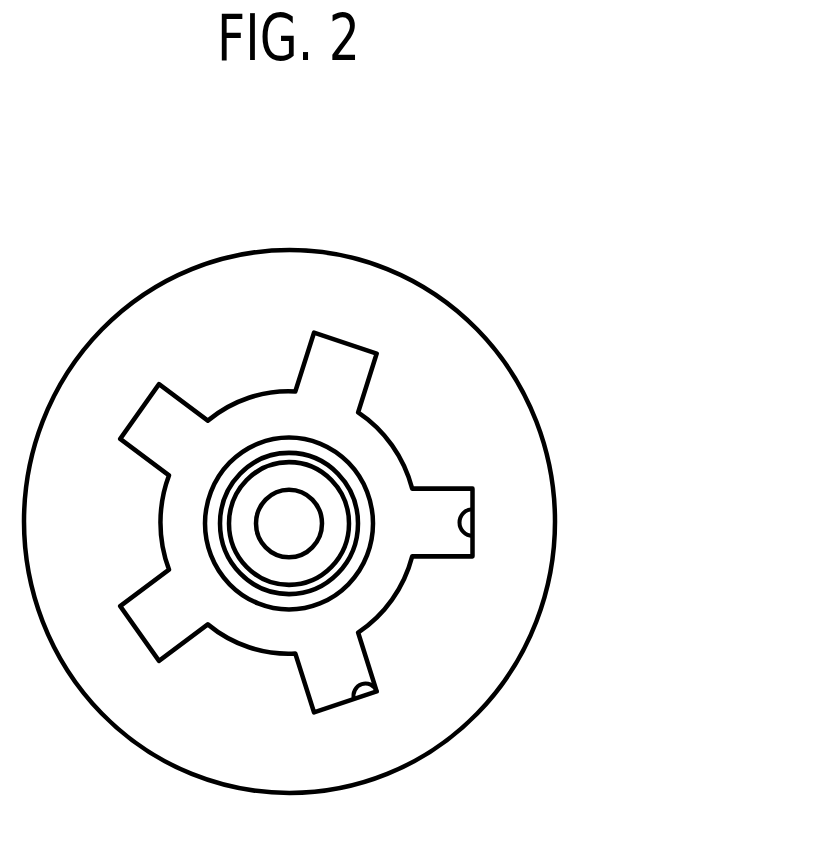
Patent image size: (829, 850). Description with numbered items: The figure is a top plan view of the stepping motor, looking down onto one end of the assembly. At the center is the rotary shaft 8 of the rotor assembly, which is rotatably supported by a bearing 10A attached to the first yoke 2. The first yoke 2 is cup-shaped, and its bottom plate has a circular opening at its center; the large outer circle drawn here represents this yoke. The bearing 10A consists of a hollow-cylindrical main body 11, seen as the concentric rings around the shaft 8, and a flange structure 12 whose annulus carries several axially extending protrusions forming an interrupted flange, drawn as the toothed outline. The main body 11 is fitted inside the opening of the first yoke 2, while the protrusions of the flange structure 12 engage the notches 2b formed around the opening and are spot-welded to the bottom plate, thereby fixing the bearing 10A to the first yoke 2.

The first yoke 2 is at (487, 645).
The notch 2b is at (467, 538).
The rotary shaft 8 is at (282, 497).
The bearing 10A is at (458, 498).
The main body 11 is at (327, 486).
The flange structure 12 is at (443, 498).